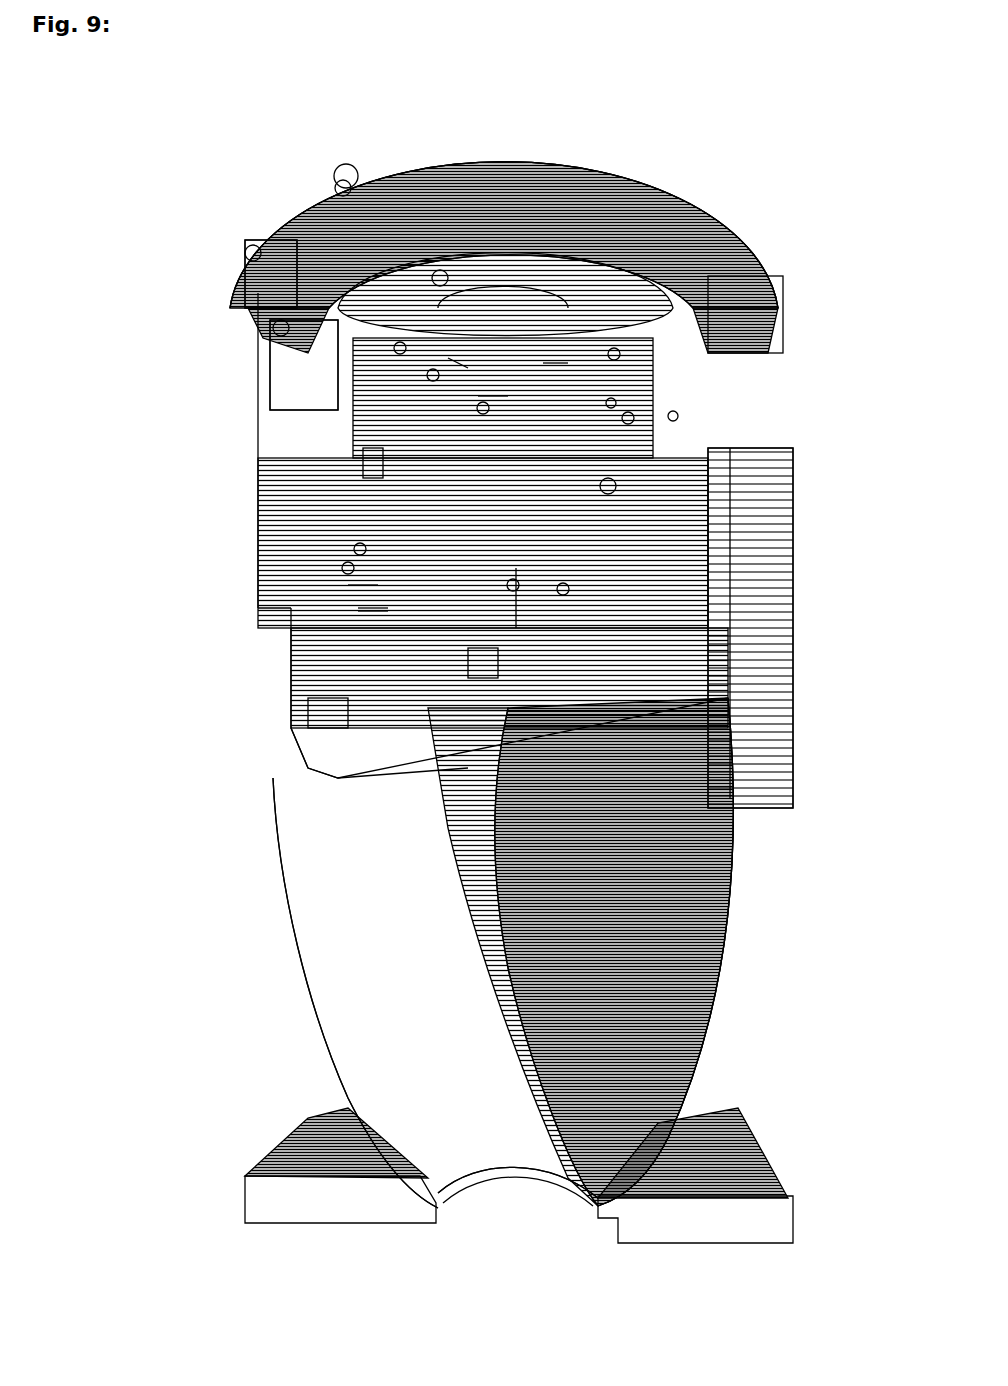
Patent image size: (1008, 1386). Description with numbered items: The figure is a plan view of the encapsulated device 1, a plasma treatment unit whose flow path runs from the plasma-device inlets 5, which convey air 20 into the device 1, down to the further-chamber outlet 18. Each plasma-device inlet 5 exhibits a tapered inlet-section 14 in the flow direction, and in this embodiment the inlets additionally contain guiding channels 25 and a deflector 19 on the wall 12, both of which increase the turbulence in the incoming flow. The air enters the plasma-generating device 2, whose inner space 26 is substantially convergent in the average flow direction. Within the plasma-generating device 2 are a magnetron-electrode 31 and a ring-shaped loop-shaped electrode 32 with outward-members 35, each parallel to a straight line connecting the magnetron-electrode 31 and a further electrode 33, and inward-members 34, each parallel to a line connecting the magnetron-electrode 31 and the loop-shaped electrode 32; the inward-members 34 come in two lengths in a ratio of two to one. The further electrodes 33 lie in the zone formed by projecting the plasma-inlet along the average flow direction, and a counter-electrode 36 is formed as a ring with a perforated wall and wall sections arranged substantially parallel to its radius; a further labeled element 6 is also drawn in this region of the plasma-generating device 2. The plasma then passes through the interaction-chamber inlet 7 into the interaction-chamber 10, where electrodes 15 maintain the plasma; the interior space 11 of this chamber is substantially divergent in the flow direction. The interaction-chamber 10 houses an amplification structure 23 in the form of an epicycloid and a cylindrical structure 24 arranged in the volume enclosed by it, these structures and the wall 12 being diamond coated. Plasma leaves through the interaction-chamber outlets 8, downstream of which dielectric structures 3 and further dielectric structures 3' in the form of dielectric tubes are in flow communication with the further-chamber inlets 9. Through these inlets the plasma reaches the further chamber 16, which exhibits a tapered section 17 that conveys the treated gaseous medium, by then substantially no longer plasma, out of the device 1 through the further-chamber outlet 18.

The device 1 is at (440, 100).
The air 20 is at (508, 102).
The plasma-device inlet 5 is at (432, 268).
The counter-electrode 36 is at (606, 345).
The guiding channels 25 is at (245, 245).
The tapered inlet-section 14 is at (245, 285).
The deflector 19 is at (273, 320).
The inward-members 34 is at (450, 355).
The further electrodes 33 is at (290, 375).
The outward-members 35 is at (425, 367).
The inner space 26 is at (475, 400).
The filter element 3 is at (277, 468).
The electrodes 15 is at (352, 541).
The interior space 11 is at (355, 577).
The wall 12 is at (365, 600).
The further dielectric structures 3' is at (318, 682).
The further-chamber inlets 9 is at (455, 761).
The tapered section 17 is at (305, 1034).
The loop-shaped electrode 32 is at (545, 355).
The magnetron-electrode 31 is at (483, 388).
The plasma-generating device 2 is at (620, 410).
The channels 6 is at (665, 408).
The interaction-chamber inlet 7 is at (600, 478).
The interaction-chamber 10 is at (730, 553).
The amplification structure 23 is at (555, 581).
The cylindrical structure 24 is at (505, 577).
The interaction-chamber outlets 8 is at (508, 578).
The further chamber 16 is at (730, 885).
The further-chamber outlet 18 is at (505, 1175).